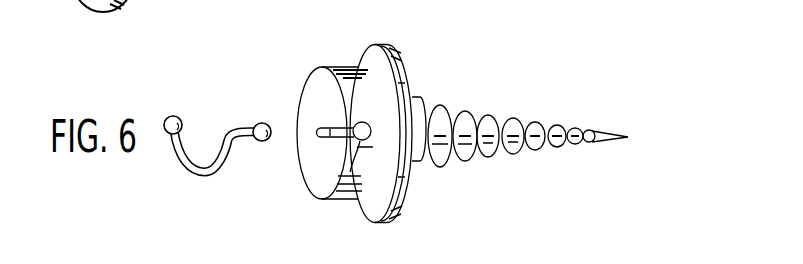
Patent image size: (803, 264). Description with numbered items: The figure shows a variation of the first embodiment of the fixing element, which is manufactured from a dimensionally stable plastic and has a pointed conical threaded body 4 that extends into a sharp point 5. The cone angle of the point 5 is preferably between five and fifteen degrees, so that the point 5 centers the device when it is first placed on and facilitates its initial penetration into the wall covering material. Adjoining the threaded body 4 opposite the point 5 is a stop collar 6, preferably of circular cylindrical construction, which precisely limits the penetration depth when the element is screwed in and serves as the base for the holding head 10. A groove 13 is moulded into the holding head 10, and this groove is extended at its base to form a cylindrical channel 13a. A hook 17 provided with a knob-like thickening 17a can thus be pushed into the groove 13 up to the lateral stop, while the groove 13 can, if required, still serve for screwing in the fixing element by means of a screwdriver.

The threaded body 4 is at (466, 117).
The point 5 is at (607, 129).
The stop collar 6 is at (399, 69).
The holding head 10 is at (345, 64).
The groove 13 is at (305, 166).
The cylindrical channel 13a is at (350, 200).
The hook 17 is at (186, 163).
The knob-like thickening 17a is at (260, 123).